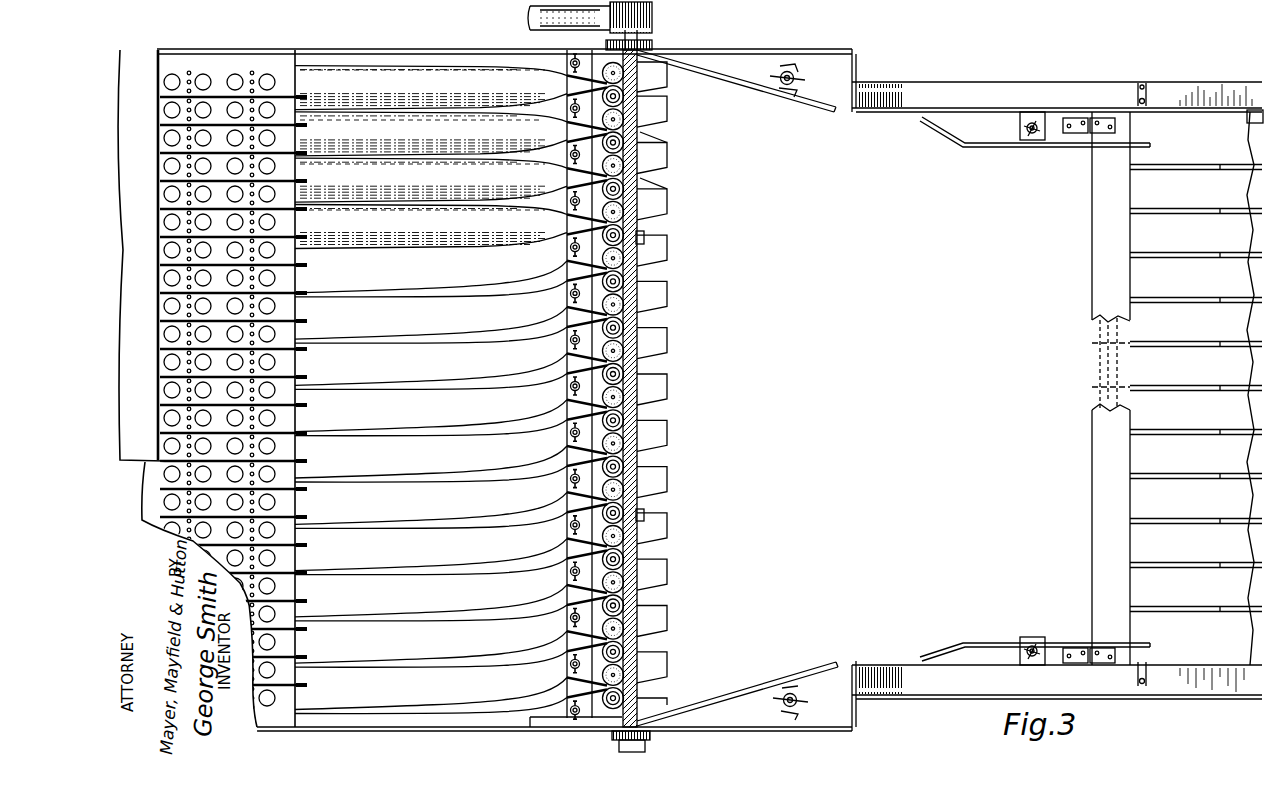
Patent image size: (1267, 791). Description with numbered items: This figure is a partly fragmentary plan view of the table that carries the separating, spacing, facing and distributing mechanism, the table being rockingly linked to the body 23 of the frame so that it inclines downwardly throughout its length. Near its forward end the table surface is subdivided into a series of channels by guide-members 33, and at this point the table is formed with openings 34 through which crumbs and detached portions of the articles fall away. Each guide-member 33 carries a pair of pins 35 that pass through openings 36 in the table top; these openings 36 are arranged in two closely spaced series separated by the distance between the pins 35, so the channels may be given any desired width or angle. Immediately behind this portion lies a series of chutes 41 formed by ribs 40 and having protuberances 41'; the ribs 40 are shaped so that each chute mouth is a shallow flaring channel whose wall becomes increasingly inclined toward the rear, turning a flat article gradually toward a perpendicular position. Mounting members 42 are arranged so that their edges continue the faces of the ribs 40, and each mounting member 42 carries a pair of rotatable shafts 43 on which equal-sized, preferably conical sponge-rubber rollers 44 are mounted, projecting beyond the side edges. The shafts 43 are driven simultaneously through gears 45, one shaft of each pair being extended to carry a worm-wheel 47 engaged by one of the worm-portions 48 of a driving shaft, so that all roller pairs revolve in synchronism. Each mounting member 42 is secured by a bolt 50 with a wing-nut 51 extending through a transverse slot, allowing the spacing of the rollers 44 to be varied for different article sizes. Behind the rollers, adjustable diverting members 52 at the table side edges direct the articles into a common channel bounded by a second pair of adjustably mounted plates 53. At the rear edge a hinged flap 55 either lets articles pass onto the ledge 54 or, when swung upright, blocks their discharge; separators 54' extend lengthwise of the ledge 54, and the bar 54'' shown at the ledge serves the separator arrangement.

The body of the frame 23 is at (893, 93).
The guide-members 33 is at (160, 152).
The openings 34 is at (270, 84).
The pins 35 is at (190, 97).
The openings 36 is at (253, 75).
The ribs 40 is at (517, 152).
The chutes 41 is at (431, 157).
The protuberances 41' is at (431, 487).
The mounting members 42 is at (645, 189).
The rotatable shafts 43 is at (632, 312).
The rollers 44 is at (635, 388).
The gears 45 is at (640, 70).
The worm-wheel 47 is at (640, 497).
The worm-portions 48 is at (637, 280).
The bolt 50 is at (572, 60).
The wing-nut 51 is at (596, 48).
The diverting members 52 is at (704, 80).
The plates 53 is at (1000, 146).
The ledge 54 is at (1196, 388).
The partition members or separators 54' is at (1196, 320).
The cross bar 54'' is at (1196, 455).
The hinged flap 55 is at (1075, 372).